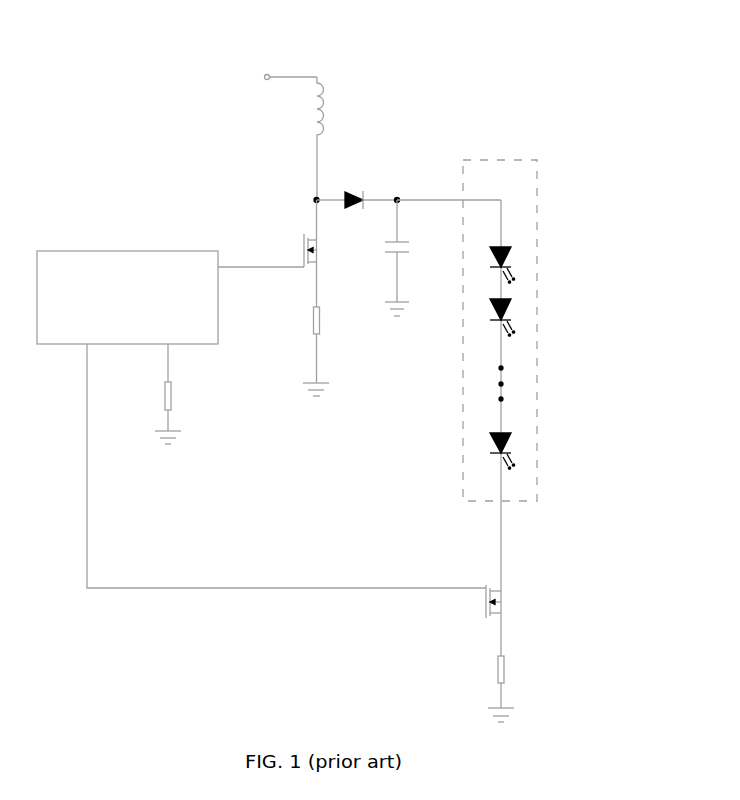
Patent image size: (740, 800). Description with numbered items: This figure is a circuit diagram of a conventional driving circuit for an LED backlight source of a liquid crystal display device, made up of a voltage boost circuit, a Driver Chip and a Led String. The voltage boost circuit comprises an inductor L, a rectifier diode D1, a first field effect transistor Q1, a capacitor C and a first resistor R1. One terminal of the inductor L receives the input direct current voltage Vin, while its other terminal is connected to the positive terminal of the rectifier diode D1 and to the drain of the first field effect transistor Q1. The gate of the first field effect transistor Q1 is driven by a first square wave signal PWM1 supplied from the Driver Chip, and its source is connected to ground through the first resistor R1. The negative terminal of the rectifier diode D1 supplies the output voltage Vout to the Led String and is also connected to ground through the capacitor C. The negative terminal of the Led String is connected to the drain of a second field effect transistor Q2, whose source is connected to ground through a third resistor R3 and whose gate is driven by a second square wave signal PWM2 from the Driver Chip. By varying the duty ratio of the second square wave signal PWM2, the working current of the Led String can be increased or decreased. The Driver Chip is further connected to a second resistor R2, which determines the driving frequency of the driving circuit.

The input direct current voltage Vin is at (262, 66).
The inductor L is at (331, 138).
The rectifier diode D1 is at (355, 182).
The output voltage Vout is at (442, 181).
The capacitor C is at (407, 258).
The first field effect transistor Q1 is at (328, 253).
The first resistor R1 is at (328, 351).
The first square wave signal PWM1 is at (261, 254).
The driver chip Driver Chip is at (127, 297).
The second resistor R2 is at (180, 394).
The second square wave signal PWM2 is at (286, 466).
The LED string Led String is at (537, 160).
The second field effect transistor Q2 is at (515, 620).
The third resistor R3 is at (513, 689).